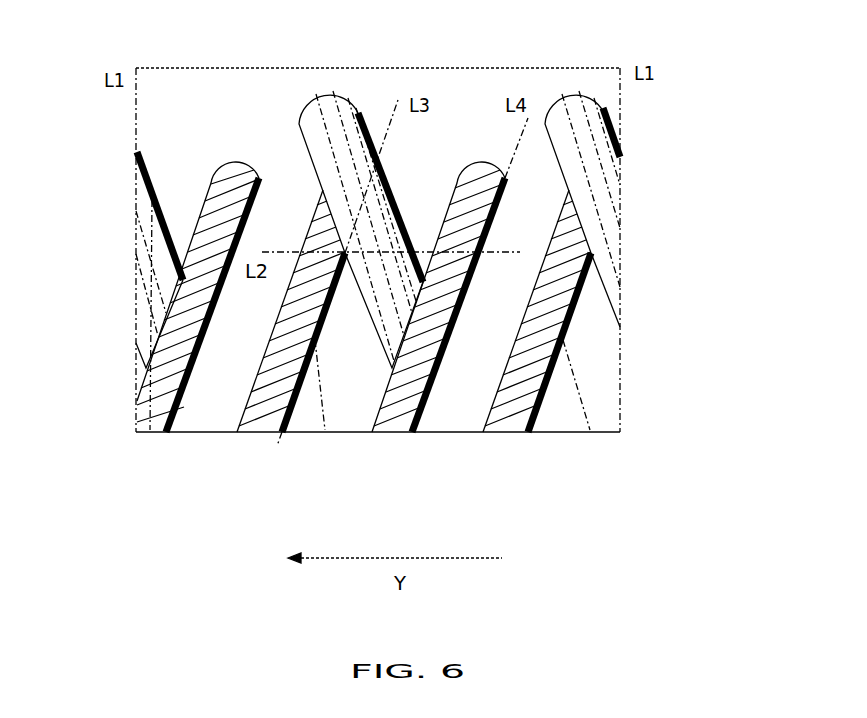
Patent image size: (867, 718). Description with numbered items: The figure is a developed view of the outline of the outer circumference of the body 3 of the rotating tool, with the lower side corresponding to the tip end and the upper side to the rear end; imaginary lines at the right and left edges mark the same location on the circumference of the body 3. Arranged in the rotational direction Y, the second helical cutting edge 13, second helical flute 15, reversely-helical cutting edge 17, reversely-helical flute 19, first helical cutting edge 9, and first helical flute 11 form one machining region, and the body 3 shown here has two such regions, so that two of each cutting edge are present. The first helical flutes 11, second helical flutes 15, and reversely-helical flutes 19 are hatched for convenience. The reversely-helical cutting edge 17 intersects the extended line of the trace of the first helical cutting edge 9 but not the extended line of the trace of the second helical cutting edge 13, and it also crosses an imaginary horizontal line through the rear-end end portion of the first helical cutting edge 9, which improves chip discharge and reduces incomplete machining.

The body 3 is at (593, 370).
The first helical cutting edge 9 is at (325, 430).
The first helical flute 11 is at (266, 415).
The second helical cutting edge 13 is at (430, 378).
The second helical flute 15 is at (400, 415).
The reversely-helical cutting edge 17 is at (373, 137).
The reversely-helical flute 19 is at (325, 125).